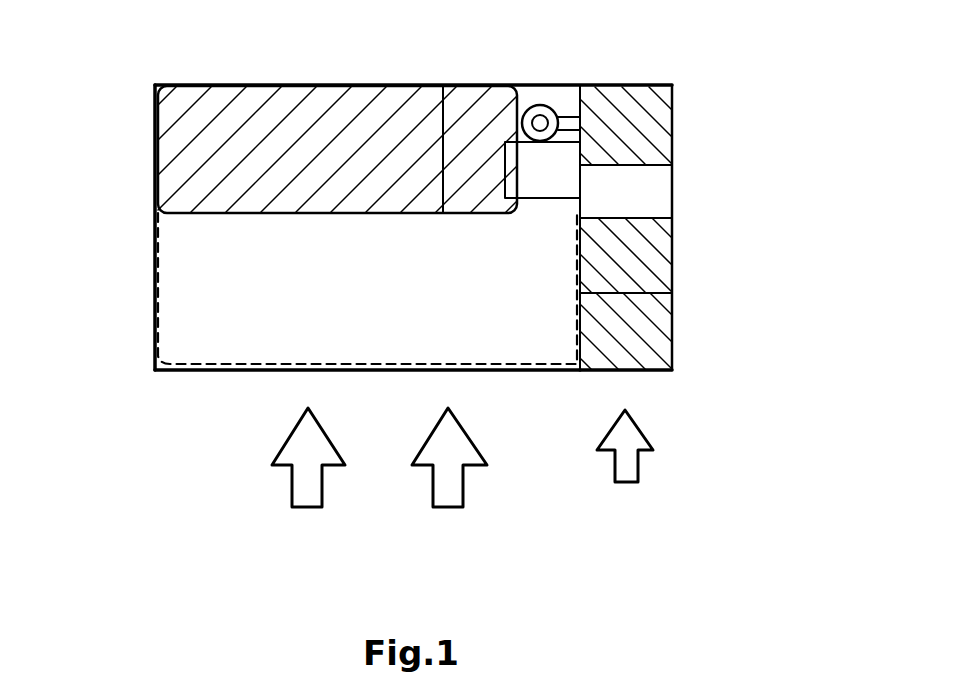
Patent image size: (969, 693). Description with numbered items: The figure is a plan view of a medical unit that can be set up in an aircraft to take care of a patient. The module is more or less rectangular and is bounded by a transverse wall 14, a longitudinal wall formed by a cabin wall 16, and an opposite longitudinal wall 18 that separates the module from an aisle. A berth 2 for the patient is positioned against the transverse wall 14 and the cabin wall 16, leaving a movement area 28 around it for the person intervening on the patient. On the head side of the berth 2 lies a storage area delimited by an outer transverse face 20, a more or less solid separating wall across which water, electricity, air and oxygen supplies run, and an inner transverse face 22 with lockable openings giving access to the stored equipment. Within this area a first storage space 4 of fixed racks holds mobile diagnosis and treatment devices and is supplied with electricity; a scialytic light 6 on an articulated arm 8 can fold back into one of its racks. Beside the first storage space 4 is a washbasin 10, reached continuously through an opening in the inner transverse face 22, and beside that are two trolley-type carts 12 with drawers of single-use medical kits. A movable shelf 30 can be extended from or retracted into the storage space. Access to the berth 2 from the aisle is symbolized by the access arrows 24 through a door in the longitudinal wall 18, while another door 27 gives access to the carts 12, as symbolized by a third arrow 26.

The berth 2 is at (183, 152).
The first storage space 4 is at (648, 128).
The scialytic light 6 is at (540, 123).
The articulated arm 8 is at (575, 106).
The washbasin 10 is at (643, 190).
The carts 12 is at (640, 270).
The transverse wall 14 is at (152, 297).
The cabin wall 16 is at (296, 85).
The longitudinal wall 18 is at (212, 368).
The outer transverse face 20 is at (675, 235).
The inner transverse face 22 is at (578, 298).
The access arrows 24 is at (315, 487).
The third arrow 26 is at (627, 470).
The door 27 is at (630, 372).
The movement area 28 is at (513, 352).
The shelf 30 is at (540, 192).